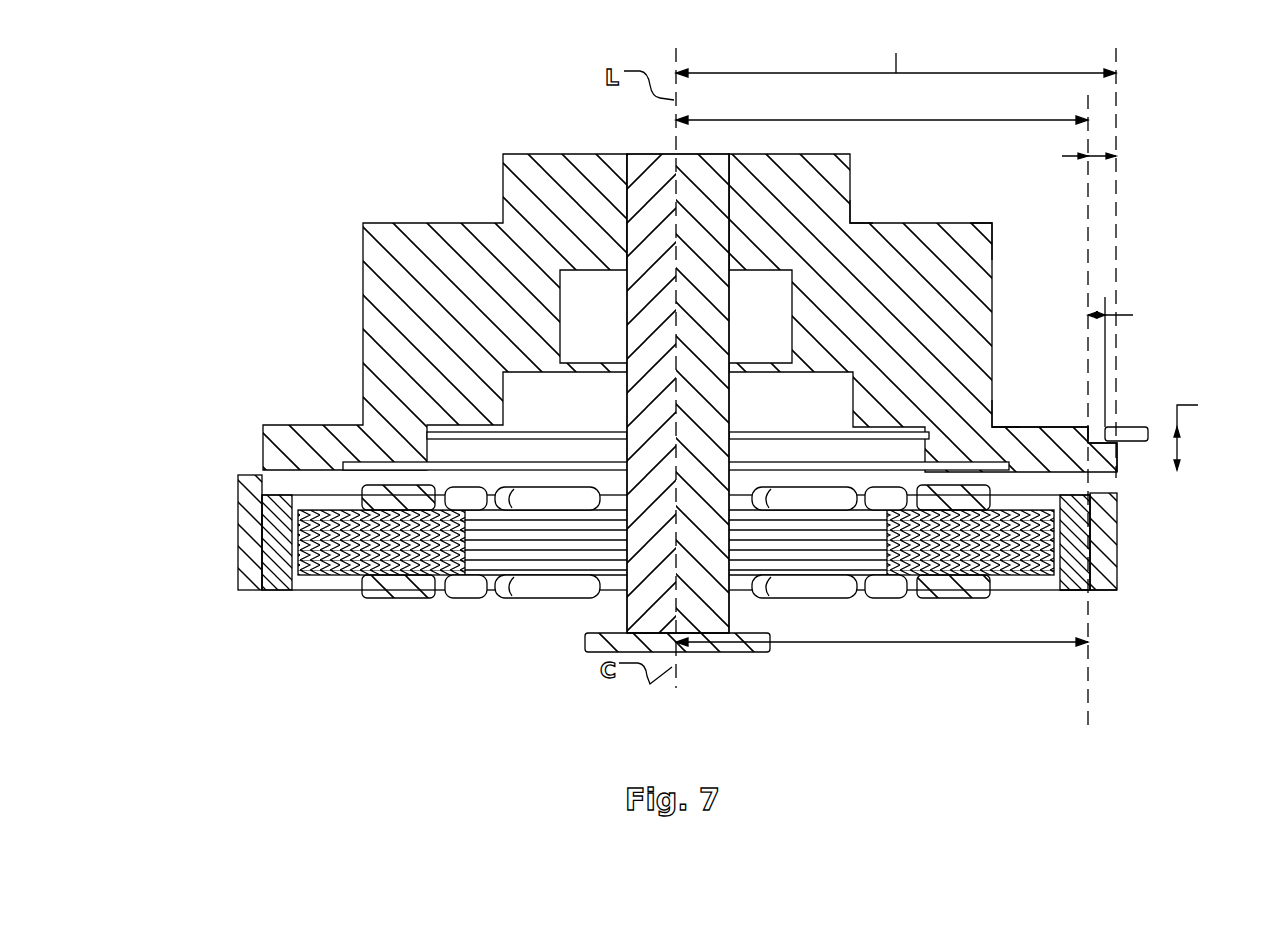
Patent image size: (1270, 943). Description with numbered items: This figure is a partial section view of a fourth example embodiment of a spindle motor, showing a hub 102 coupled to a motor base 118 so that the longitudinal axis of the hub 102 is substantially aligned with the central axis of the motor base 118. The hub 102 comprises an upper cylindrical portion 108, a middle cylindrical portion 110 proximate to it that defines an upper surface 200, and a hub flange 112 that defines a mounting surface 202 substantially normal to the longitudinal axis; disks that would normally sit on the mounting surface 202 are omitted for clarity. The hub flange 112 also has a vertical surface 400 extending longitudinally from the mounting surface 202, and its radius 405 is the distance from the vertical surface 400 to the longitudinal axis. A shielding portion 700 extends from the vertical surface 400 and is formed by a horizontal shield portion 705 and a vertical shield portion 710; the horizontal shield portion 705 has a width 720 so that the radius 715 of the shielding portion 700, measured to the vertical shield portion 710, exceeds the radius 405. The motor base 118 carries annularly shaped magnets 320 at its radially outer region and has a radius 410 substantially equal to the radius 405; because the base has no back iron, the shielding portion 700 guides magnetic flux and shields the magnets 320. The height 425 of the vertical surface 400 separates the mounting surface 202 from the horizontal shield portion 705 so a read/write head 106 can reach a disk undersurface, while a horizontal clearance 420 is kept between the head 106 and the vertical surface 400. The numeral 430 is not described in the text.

The hub 102 is at (160, 152).
The motor base 118 is at (687, 560).
The upper cylindrical portion 108 is at (849, 192).
The upper surface 200 is at (851, 224).
The middle cylindrical portion 110 is at (990, 230).
The hub flange 112 is at (1080, 425).
The mounting surface 202 is at (1010, 427).
The read/write head 106 is at (1138, 428).
The clearance 420 is at (1130, 317).
The height 425 is at (1206, 432).
The vertical surface 400 is at (1197, 470).
The horizontal shield portion 705 is at (1118, 488).
The shielding portion 700 is at (1119, 542).
The vertical shield portion 710 is at (1108, 557).
The annularly shaped magnet 320 is at (1067, 592).
The retaining flange 430 is at (712, 652).
The radius 405 is at (882, 120).
The radius 410 is at (882, 643).
The radius 715 is at (896, 53).
The width 720 is at (1064, 156).